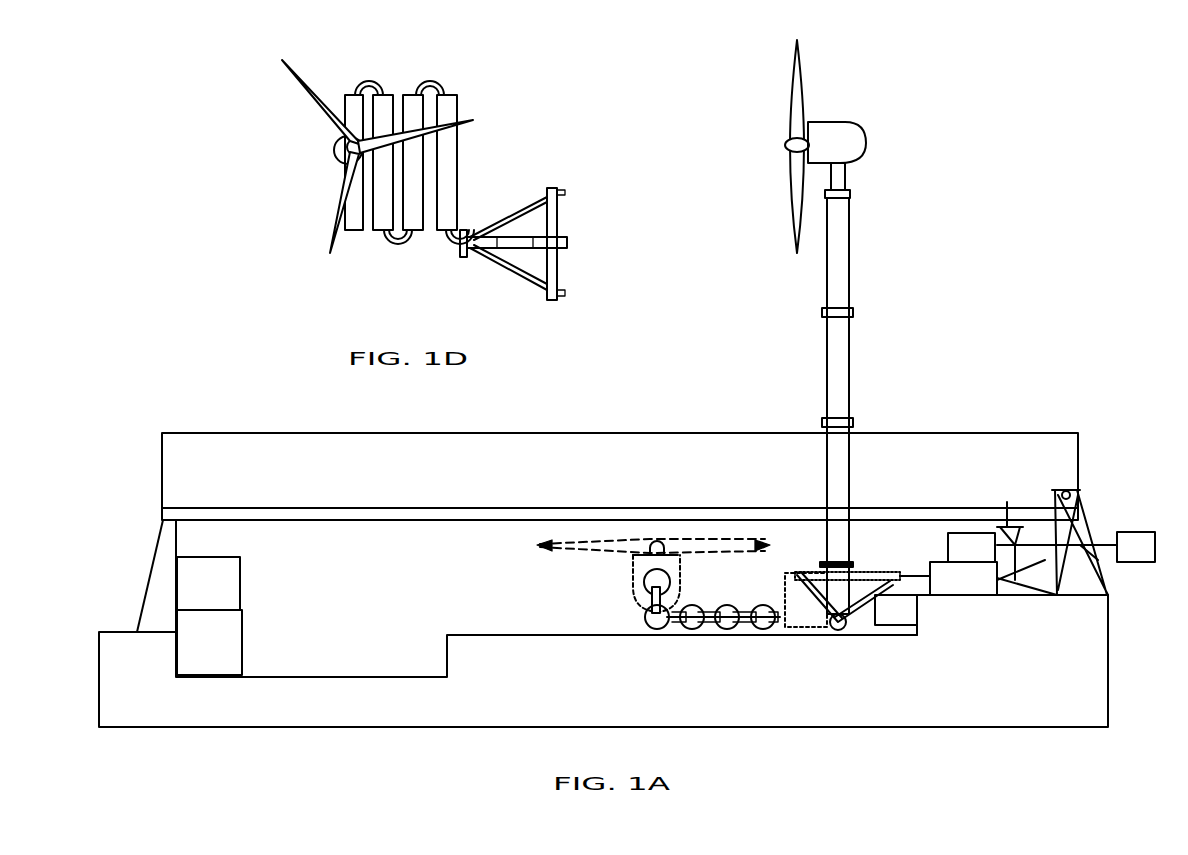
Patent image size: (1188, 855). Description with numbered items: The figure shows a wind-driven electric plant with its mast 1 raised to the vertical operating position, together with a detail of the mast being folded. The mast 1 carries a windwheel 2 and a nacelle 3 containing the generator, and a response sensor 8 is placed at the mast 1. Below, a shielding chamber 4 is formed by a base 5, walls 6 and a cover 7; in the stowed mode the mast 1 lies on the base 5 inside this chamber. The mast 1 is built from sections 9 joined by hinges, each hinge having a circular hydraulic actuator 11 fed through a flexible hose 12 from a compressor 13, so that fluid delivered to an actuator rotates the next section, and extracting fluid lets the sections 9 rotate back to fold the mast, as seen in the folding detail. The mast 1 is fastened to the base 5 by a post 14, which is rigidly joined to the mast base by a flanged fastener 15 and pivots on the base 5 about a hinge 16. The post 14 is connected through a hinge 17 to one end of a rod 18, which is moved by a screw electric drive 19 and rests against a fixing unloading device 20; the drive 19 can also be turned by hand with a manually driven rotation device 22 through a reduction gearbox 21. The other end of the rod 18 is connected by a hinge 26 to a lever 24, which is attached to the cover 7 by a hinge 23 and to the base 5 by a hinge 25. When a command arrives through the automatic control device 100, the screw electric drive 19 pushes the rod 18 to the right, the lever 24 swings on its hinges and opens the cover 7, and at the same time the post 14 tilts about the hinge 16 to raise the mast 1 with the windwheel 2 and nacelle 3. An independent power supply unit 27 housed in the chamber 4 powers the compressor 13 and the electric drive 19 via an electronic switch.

In FIG. 1A, the mast 1 is at (840, 333).
In FIG. 1A, the windwheel 2 is at (805, 105).
In FIG. 1D, the nacelle 3 is at (340, 155).
In FIG. 1A, the nacelle 3 is at (838, 140).
In FIG. 1A, the shielding chamber 4 is at (442, 553).
In FIG. 1A, the base 5 is at (585, 647).
In FIG. 1A, the walls 6 is at (148, 575).
In FIG. 1A, the cover 7 is at (557, 508).
In FIG. 1A, the response sensor 8 is at (848, 173).
In FIG. 1D, the sections 9 is at (450, 165).
In FIG. 1A, the sections 9 is at (823, 382).
In FIG. 1D, the circular hydraulic actuators 11 is at (393, 243).
In FIG. 1A, the flexible hose 12 is at (896, 560).
In FIG. 1A, the compressor 13 is at (967, 550).
In FIG. 1D, the post 14 is at (487, 230).
In FIG. 1A, the post 14 is at (803, 572).
In FIG. 1A, the flanged fastener 15 is at (833, 562).
In FIG. 1A, the hinge 16 is at (800, 575).
In FIG. 1A, the hinge 17 is at (900, 540).
In FIG. 1A, the rod 18 is at (916, 550).
In FIG. 1A, the screw electric drive 19 is at (938, 550).
In FIG. 1A, the fixing unloading device 20 is at (843, 520).
In FIG. 1A, the reduction gearbox 21 is at (988, 547).
In FIG. 1A, the manually driven rotation device 22 is at (1135, 537).
In FIG. 1A, the hinge 23 is at (1007, 502).
In FIG. 1A, the lever 24 is at (1060, 490).
In FIG. 1A, the hinge 25 is at (1087, 543).
In FIG. 1A, the hinge 26 is at (1028, 520).
In FIG. 1A, the independent power supply unit 27 is at (223, 633).
In FIG. 1A, the automatic control device 100 is at (222, 577).